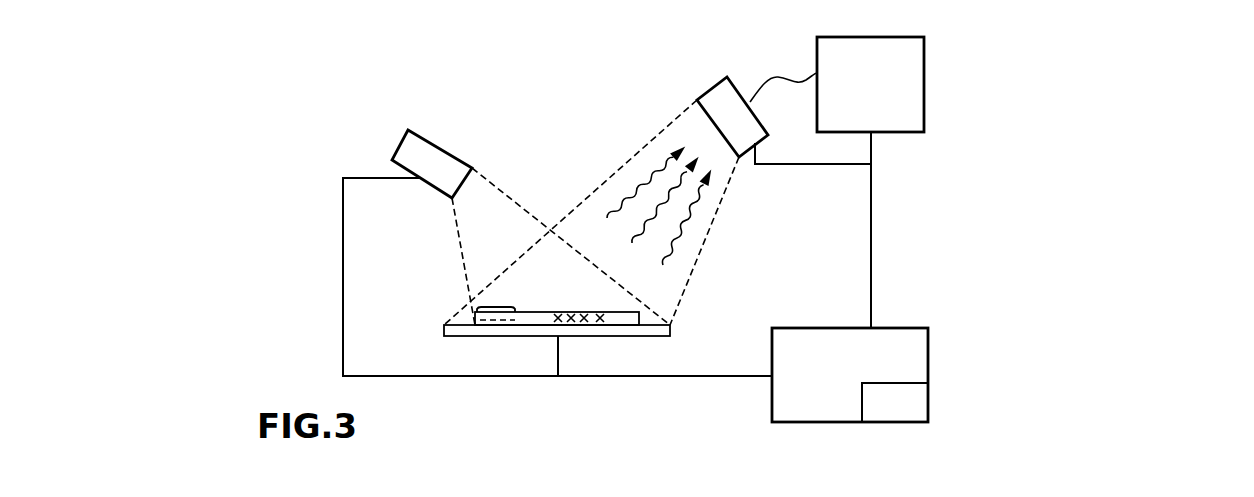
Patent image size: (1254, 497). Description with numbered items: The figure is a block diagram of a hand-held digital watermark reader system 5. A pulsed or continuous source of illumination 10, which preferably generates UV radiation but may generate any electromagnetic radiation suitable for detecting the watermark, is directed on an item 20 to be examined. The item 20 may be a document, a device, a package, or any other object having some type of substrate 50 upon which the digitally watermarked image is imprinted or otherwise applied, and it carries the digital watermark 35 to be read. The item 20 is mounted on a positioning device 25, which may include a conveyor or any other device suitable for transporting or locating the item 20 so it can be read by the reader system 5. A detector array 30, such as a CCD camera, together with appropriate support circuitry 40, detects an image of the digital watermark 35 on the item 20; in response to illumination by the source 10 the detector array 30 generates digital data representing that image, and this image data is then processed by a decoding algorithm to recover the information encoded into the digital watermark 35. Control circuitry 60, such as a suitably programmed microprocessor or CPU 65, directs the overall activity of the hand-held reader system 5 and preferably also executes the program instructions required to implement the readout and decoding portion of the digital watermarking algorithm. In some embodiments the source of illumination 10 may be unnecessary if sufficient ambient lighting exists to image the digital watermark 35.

The hand-held digital watermark reader system 5 is at (548, 138).
The source of illumination 10 is at (417, 128).
The item 20 is at (533, 312).
The positioning device 25 is at (518, 338).
The detector array 30 is at (708, 94).
The digital watermark 35 is at (497, 307).
The support circuitry 40 is at (924, 56).
The substrate 50 is at (560, 324).
The control circuitry 60 is at (928, 342).
The microprocessor (CPU) 65 is at (928, 407).